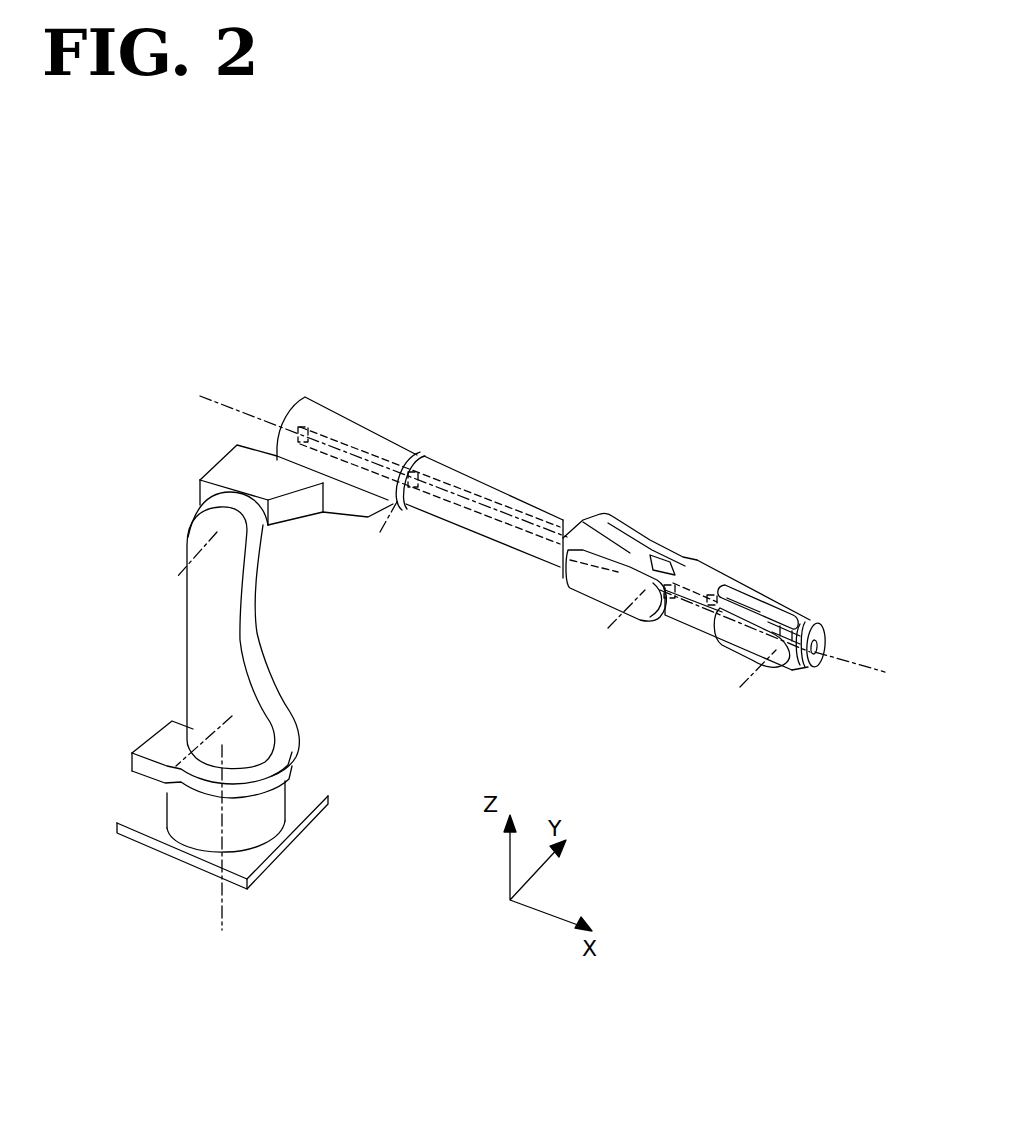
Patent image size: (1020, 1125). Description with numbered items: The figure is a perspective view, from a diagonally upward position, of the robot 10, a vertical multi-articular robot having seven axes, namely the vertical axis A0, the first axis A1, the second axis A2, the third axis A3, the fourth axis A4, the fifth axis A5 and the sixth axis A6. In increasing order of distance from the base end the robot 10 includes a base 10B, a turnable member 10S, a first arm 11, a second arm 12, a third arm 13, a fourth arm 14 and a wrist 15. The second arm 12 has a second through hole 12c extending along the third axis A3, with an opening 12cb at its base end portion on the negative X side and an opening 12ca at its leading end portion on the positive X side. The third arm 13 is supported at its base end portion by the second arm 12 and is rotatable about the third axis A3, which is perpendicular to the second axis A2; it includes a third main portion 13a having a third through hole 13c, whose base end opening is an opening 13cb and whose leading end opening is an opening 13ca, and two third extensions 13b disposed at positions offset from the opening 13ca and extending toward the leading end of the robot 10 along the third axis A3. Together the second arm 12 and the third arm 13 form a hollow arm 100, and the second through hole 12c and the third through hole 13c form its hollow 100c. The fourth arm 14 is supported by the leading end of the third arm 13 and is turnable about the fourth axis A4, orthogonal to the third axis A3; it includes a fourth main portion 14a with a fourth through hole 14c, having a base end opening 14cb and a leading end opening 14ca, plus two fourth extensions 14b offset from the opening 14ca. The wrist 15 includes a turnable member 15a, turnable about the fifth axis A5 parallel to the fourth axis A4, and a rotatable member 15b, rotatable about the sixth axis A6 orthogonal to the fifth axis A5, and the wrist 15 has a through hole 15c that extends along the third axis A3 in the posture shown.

The robot 10 is at (176, 411).
The base 10B is at (270, 822).
The turnable member 10S is at (160, 741).
The first arm 11 is at (203, 597).
The second arm 12 is at (332, 425).
The second through hole 12c is at (352, 470).
The opening 12cb is at (300, 428).
The opening 12ca is at (410, 481).
The third arm 13 is at (620, 444).
The third main portion 13a is at (465, 488).
The third extensions 13b is at (650, 547).
The third through hole 13c is at (477, 517).
The opening 13ca is at (608, 557).
The opening 13cb is at (413, 460).
The hollow arm 100 is at (591, 380).
The hollow 100c is at (380, 612).
The fourth arm 14 is at (717, 716).
The fourth main portion 14a is at (693, 613).
The fourth extensions 14b is at (730, 622).
The fourth through hole 14c is at (713, 577).
The opening 14ca is at (715, 596).
The opening 14cb is at (683, 575).
The wrist 15 is at (807, 553).
The turnable member 15a is at (793, 600).
The rotatable member 15b is at (806, 622).
The through hole 15c is at (812, 652).
The vertical axis A0 is at (217, 833).
The first axis A1 is at (207, 735).
The second axis A2 is at (203, 548).
The third axis A3 is at (384, 527).
The fourth axis A4 is at (612, 617).
The fifth axis A5 is at (757, 683).
The sixth axis A6 is at (843, 657).